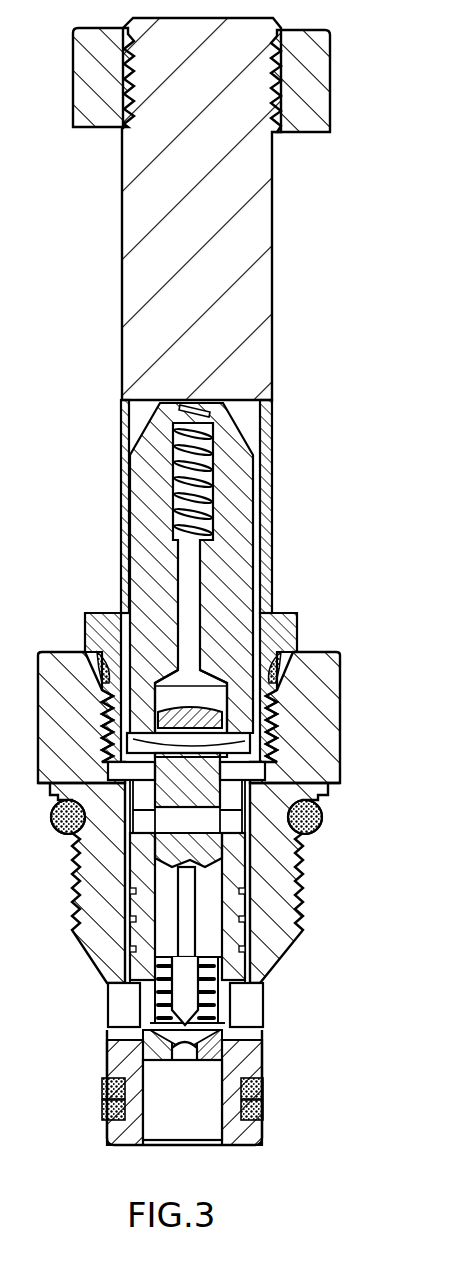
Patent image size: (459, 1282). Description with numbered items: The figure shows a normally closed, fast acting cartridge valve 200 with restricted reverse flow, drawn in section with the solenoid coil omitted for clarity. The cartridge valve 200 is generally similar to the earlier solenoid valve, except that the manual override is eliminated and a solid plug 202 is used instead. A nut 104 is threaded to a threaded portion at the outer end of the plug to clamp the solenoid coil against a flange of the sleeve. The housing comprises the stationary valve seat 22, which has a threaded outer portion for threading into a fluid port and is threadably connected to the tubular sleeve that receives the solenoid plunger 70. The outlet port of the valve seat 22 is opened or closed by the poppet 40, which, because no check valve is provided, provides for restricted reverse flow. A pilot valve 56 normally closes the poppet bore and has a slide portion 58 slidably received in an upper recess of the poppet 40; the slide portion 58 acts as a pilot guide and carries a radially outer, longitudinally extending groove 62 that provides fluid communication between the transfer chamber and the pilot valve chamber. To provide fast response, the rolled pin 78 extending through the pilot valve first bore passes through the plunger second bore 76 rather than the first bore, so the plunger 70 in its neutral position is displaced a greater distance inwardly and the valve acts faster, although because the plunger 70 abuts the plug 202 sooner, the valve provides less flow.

The cartridge valve 200 is at (287, 354).
The solid plug 202 is at (243, 257).
The nut 104 is at (312, 103).
The solenoid plunger 70 is at (238, 567).
The plunger second bore 76 is at (227, 710).
The rolled pin 78 is at (235, 747).
The valve seat 22 is at (277, 900).
The poppet 40 is at (223, 938).
The slide portion 58 is at (207, 890).
The groove 62 is at (183, 908).
The pilot valve 56 is at (190, 992).